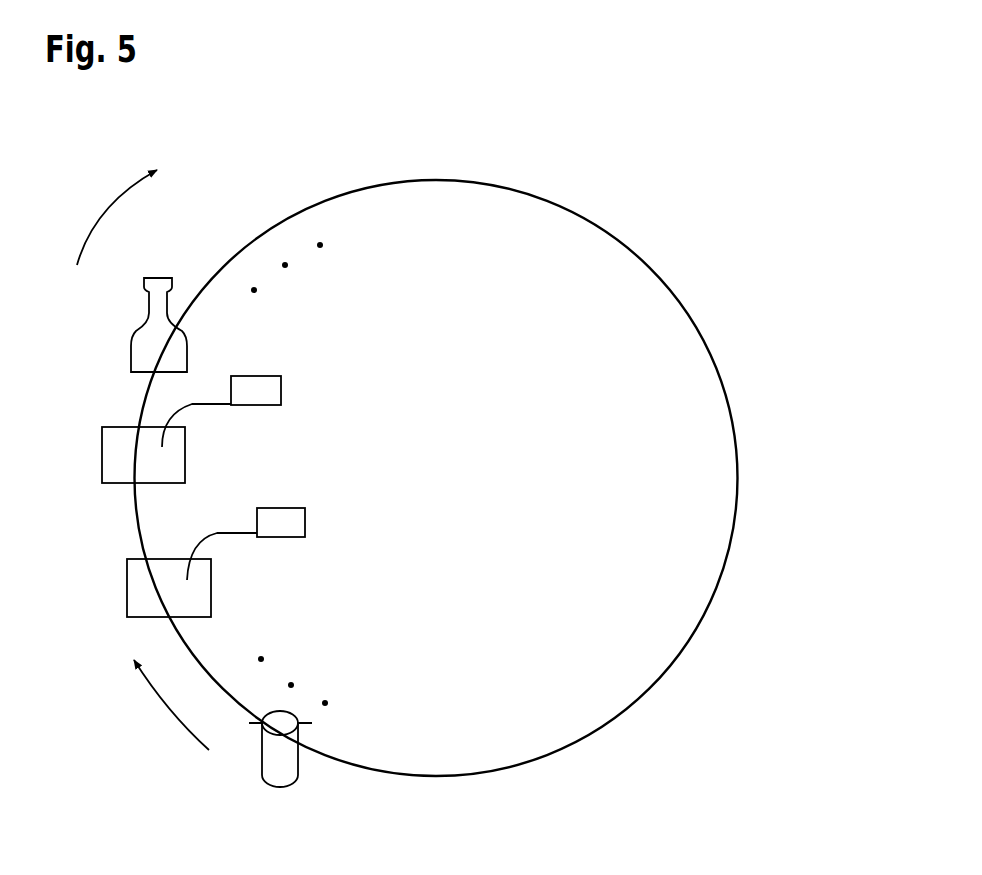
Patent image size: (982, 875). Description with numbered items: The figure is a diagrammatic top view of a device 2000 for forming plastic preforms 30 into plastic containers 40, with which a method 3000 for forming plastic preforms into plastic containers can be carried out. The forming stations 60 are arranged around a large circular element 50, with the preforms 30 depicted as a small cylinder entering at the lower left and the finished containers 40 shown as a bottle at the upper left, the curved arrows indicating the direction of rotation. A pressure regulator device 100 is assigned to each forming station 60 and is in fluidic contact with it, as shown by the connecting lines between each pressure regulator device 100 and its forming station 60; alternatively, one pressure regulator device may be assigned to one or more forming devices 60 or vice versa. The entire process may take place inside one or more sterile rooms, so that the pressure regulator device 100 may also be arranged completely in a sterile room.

The drum 50 is at (665, 682).
The device for forming plastic preforms into plastic containers 2000 is at (622, 185).
The method for forming plastic preforms into plastic containers 3000 is at (703, 148).
The plastic container 40 is at (143, 343).
The forming station 60 is at (172, 458).
The pressure regulator device 100 is at (267, 392).
The plastic preform 30 is at (278, 765).